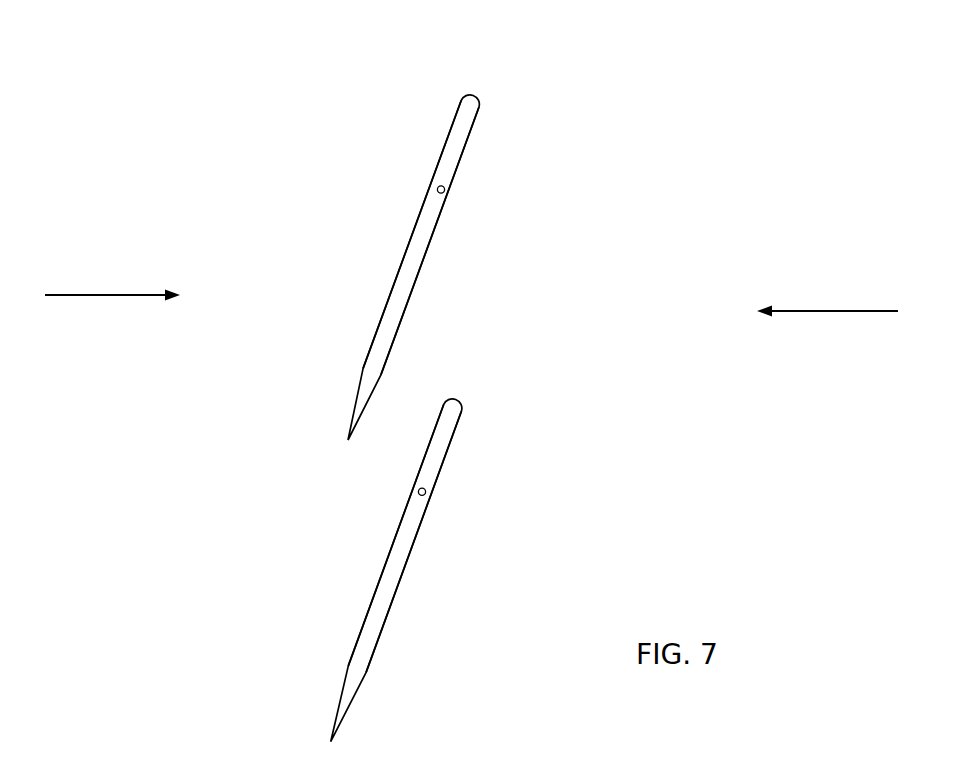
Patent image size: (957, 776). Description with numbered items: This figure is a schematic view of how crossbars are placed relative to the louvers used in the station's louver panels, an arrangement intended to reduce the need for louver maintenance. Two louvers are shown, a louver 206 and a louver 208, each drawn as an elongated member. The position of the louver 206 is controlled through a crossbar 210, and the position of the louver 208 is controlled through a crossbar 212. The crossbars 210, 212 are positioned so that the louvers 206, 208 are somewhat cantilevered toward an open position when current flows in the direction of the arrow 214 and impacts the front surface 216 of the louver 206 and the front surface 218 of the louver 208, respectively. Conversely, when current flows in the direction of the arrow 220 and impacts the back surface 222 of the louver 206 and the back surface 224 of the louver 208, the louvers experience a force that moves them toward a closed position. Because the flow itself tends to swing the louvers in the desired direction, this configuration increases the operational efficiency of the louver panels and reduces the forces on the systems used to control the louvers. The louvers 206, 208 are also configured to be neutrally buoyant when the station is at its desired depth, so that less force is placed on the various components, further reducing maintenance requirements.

The louver 206 is at (472, 122).
The louver 208 is at (452, 441).
The crossbar 210 is at (439, 194).
The crossbar 212 is at (420, 497).
The arrow 214 is at (86, 294).
The front surface 216 is at (447, 135).
The front surface 218 is at (378, 582).
The arrow 220 is at (818, 306).
The back surface 222 is at (428, 250).
The back surface 224 is at (396, 581).